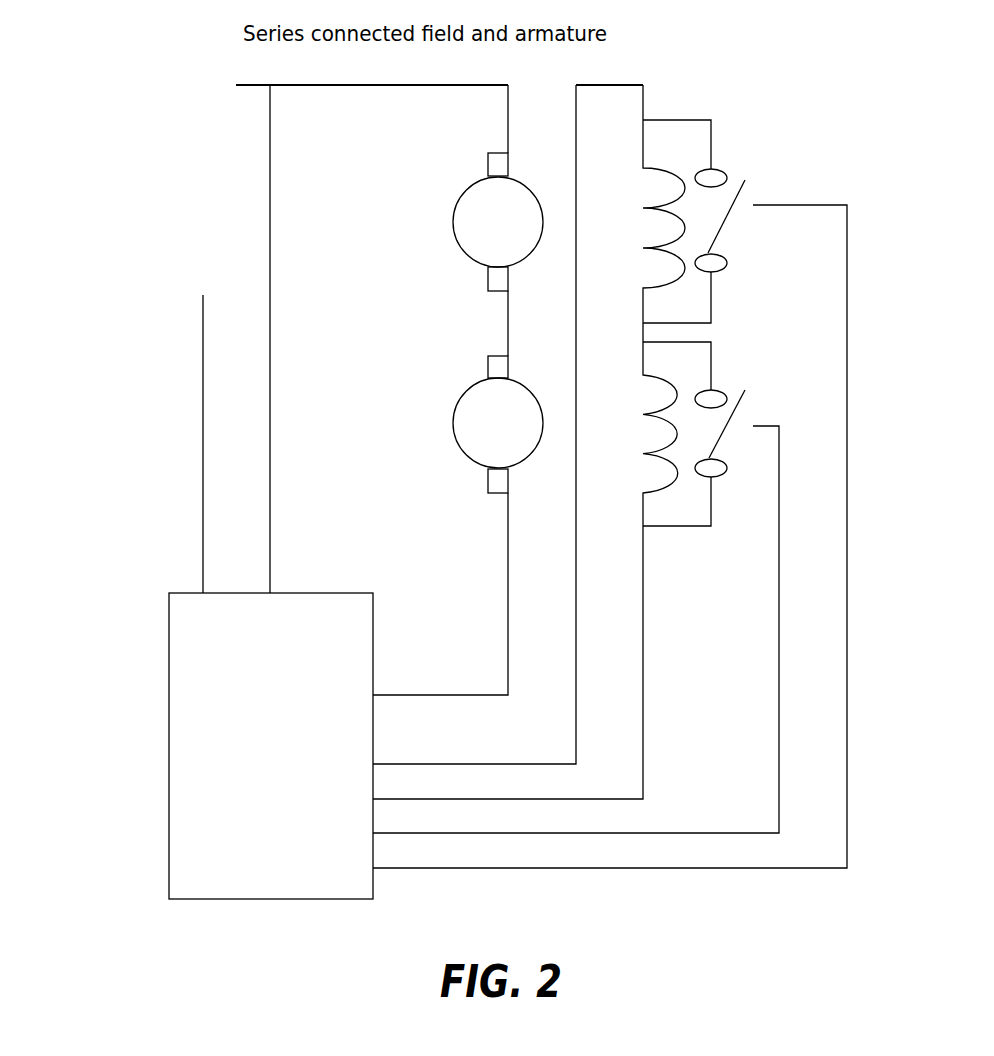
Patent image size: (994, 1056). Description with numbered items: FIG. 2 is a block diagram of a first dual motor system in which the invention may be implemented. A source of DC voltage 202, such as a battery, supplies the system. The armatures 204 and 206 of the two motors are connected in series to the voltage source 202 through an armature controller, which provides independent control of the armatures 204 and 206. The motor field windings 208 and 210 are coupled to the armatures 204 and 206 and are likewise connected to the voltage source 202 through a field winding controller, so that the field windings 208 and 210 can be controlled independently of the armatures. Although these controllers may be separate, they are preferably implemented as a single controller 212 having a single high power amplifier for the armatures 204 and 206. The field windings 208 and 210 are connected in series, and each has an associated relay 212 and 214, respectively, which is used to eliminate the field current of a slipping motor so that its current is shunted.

The source of DC voltage 202 is at (148, 173).
The armature 204 is at (457, 214).
The armature 206 is at (459, 402).
The motor field winding 208 is at (702, 120).
The motor field winding 210 is at (695, 527).
The controller 212 is at (748, 193).
The relay 214 is at (743, 415).